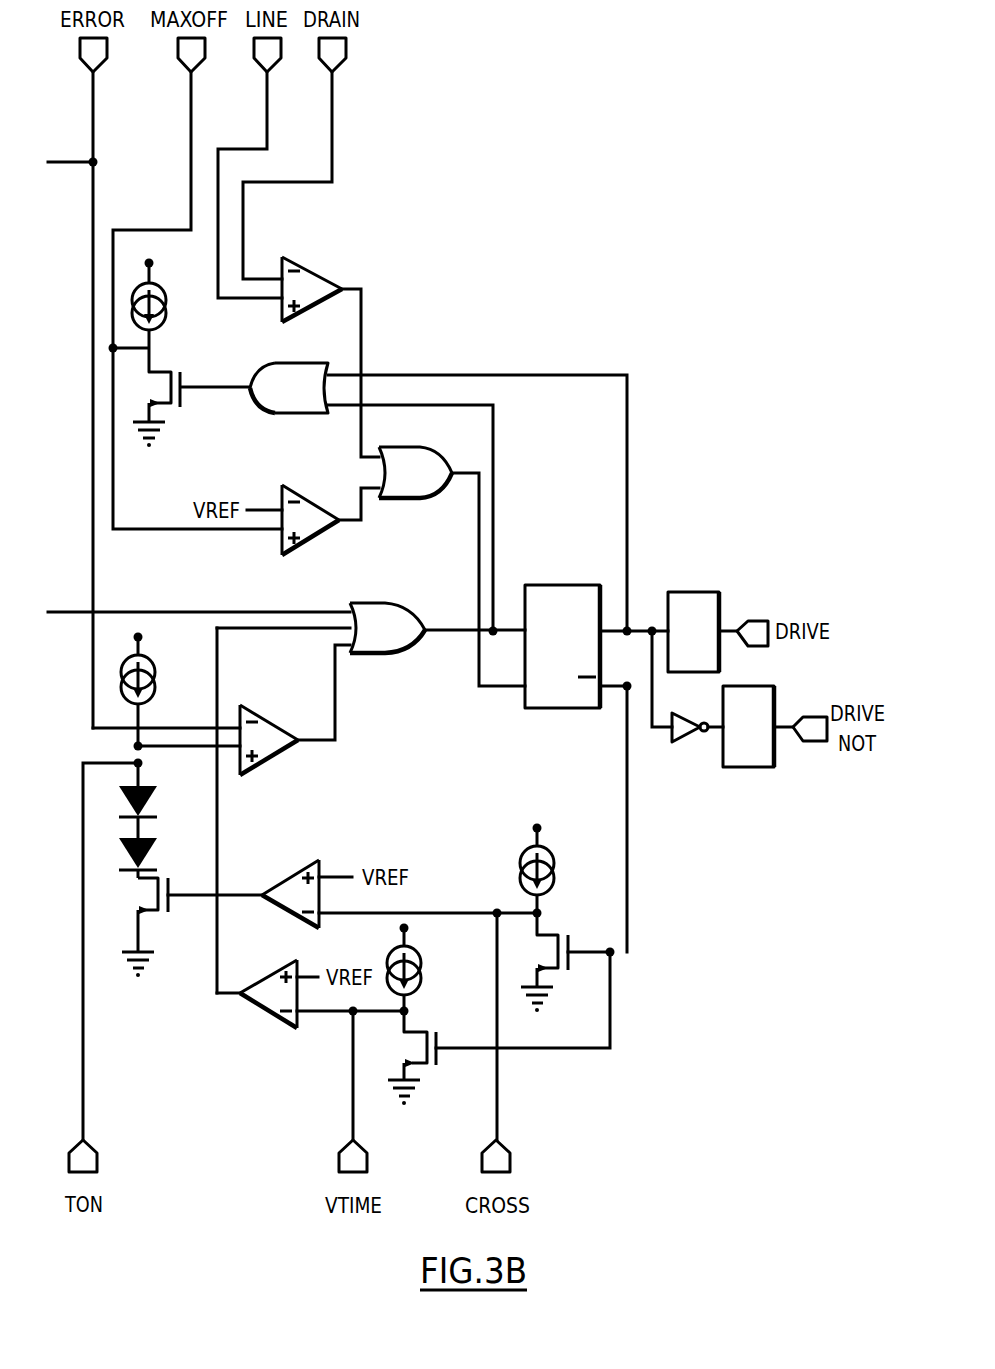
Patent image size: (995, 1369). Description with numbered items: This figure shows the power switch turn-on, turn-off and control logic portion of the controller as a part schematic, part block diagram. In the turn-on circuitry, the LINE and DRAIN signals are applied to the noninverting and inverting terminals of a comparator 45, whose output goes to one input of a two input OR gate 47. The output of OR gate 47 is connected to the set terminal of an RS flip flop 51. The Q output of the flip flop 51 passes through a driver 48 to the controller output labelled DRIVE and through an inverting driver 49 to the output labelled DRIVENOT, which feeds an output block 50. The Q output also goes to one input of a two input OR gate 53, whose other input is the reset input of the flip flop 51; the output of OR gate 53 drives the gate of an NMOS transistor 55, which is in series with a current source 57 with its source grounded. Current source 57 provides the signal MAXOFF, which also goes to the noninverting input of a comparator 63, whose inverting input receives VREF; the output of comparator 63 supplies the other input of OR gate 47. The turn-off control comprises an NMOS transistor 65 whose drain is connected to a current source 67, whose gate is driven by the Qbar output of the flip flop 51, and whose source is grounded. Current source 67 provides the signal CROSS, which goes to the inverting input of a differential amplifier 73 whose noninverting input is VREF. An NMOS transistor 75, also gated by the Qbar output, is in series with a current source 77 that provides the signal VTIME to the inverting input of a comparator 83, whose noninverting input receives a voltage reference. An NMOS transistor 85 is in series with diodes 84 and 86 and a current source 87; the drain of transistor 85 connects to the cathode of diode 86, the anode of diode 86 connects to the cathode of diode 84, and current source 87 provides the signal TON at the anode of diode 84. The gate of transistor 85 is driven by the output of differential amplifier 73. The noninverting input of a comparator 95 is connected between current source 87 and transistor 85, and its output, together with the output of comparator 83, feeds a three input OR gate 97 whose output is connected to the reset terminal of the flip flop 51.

The comparator 45 is at (318, 272).
The two input OR gate 47 is at (395, 500).
The driver 48 is at (694, 592).
The inverting driver 49 is at (690, 736).
The drive-not output buffer 50 is at (748, 768).
The RS flip flop 51 is at (559, 709).
The two input OR gate 53 is at (300, 414).
The NMOS transistor 55 is at (176, 370).
The current source 57 is at (166, 302).
The comparator 63 is at (313, 541).
The NMOS transistor 65 is at (565, 935).
The current source 67 is at (550, 864).
The differential amplifier 73 is at (291, 870).
The NMOS transistor 75 is at (432, 1031).
The current source 77 is at (420, 963).
The comparator 83 is at (270, 1016).
The diode 84 is at (150, 819).
The NMOS transistor 85 is at (161, 878).
The diode 86 is at (133, 872).
The current source 87 is at (156, 672).
The comparator 95 is at (272, 722).
The three input OR gate 97 is at (366, 656).